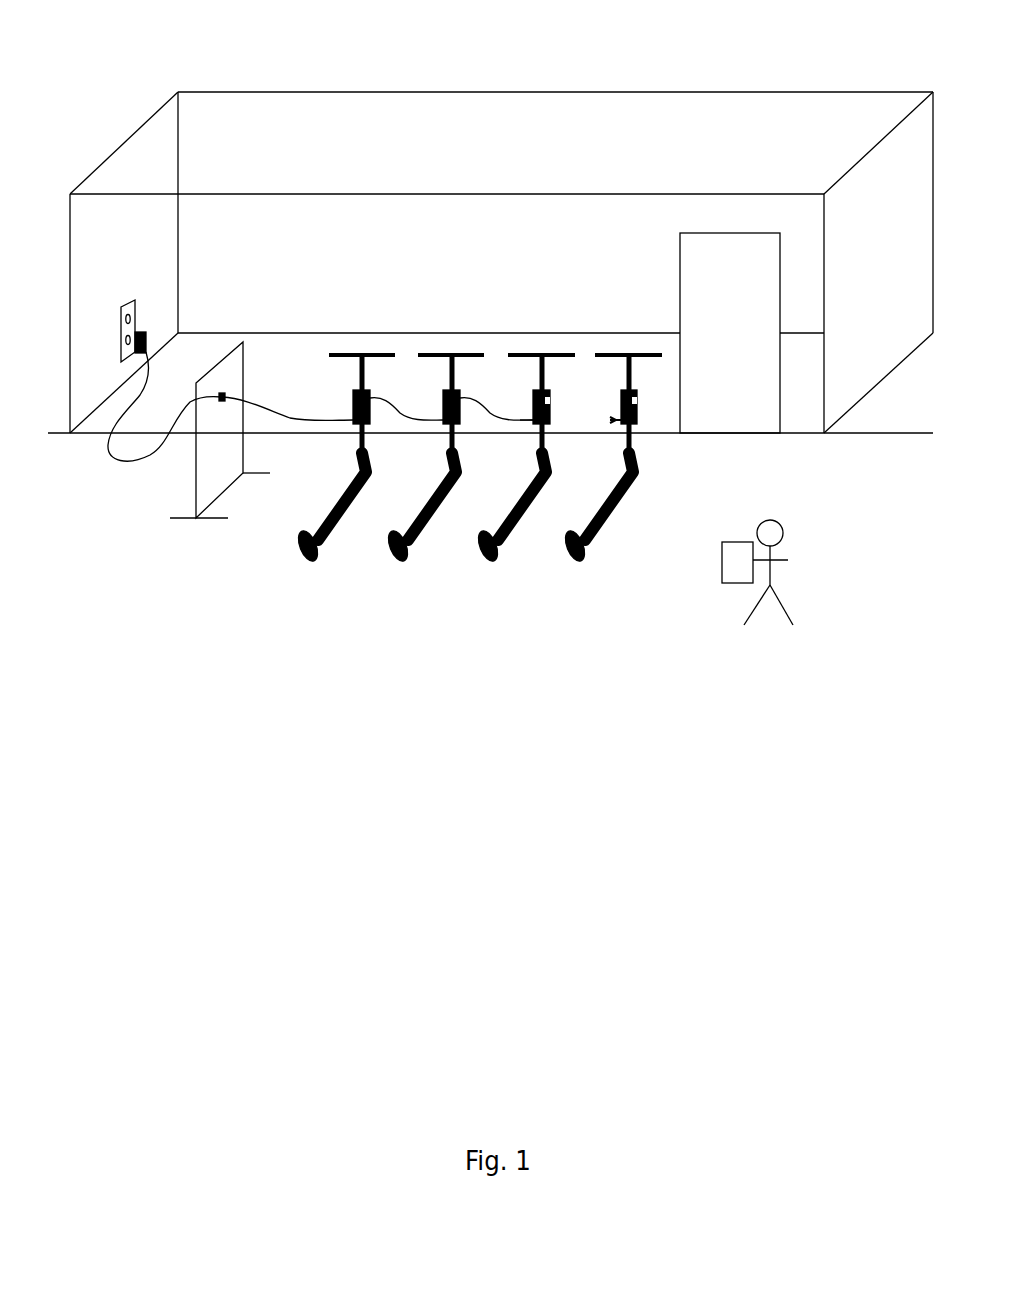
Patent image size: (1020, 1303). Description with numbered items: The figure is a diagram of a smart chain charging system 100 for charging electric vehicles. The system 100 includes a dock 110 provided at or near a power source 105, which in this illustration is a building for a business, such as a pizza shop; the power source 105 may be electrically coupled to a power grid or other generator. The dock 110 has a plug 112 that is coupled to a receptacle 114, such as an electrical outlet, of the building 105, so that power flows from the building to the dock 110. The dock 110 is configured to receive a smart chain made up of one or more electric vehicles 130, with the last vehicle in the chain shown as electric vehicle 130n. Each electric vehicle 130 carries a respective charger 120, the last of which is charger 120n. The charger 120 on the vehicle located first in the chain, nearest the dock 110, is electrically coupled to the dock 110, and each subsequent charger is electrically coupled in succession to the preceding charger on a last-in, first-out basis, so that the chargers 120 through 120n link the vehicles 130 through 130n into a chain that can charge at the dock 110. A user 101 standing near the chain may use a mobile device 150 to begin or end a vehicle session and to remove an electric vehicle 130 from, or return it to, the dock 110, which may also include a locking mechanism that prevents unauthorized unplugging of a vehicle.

The smart chain charging system 100 is at (449, 40).
The power source 105 is at (152, 114).
The dock 110 is at (196, 468).
The plug 112 is at (160, 329).
The receptacle 114 is at (121, 319).
The charger 120 is at (355, 423).
The nth charger 120n is at (637, 422).
The electric vehicle 130 is at (326, 508).
The nth electric vehicle 130n is at (615, 507).
The mobile device 150 is at (721, 558).
The user 101 is at (788, 560).